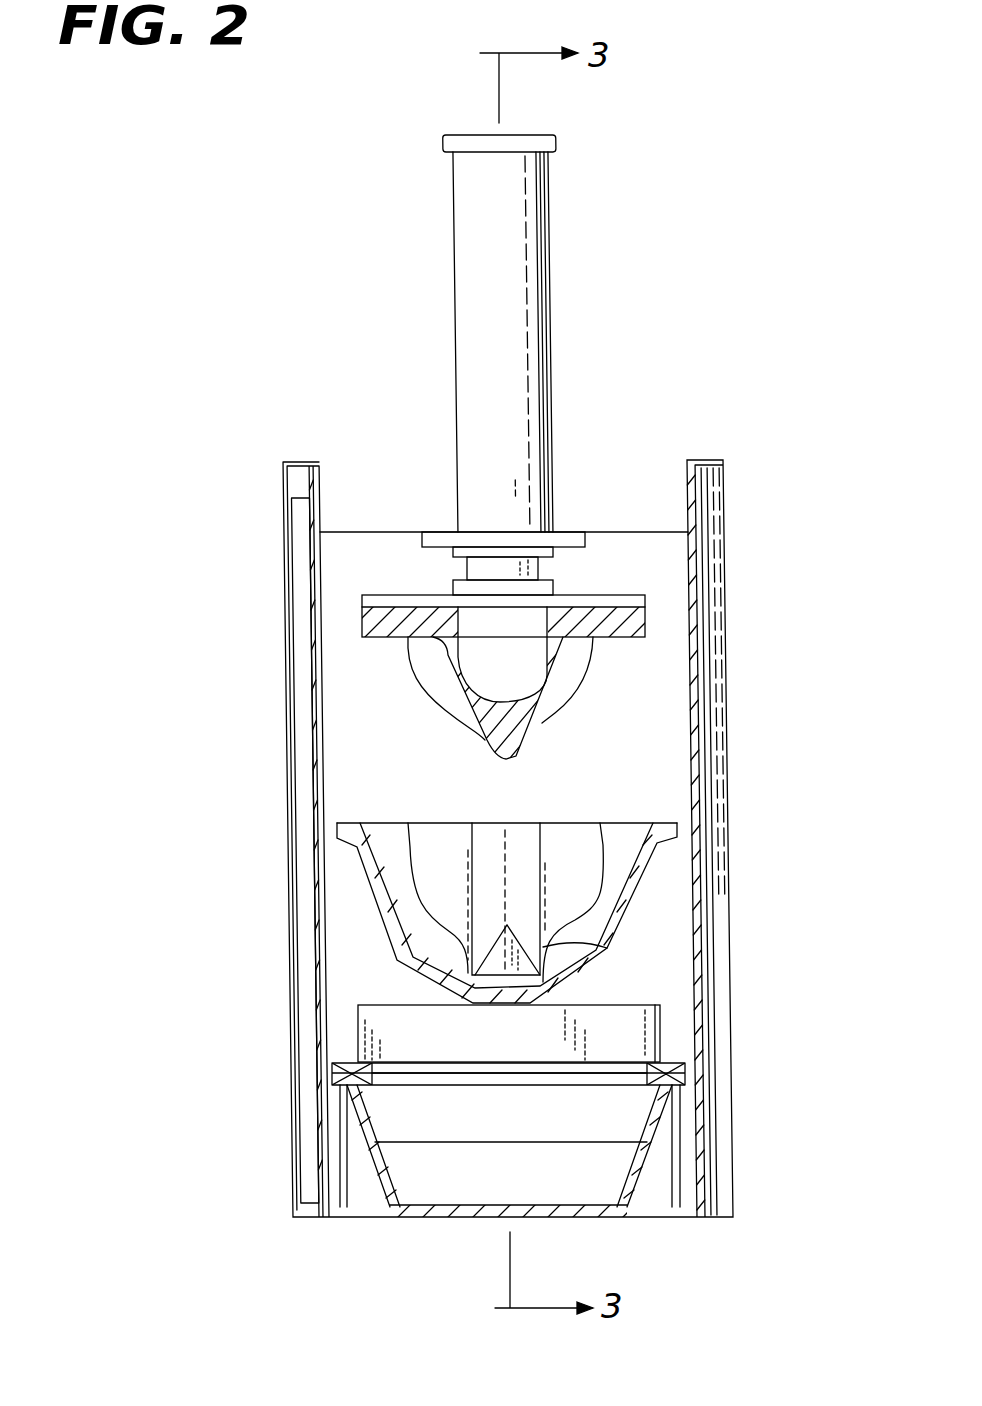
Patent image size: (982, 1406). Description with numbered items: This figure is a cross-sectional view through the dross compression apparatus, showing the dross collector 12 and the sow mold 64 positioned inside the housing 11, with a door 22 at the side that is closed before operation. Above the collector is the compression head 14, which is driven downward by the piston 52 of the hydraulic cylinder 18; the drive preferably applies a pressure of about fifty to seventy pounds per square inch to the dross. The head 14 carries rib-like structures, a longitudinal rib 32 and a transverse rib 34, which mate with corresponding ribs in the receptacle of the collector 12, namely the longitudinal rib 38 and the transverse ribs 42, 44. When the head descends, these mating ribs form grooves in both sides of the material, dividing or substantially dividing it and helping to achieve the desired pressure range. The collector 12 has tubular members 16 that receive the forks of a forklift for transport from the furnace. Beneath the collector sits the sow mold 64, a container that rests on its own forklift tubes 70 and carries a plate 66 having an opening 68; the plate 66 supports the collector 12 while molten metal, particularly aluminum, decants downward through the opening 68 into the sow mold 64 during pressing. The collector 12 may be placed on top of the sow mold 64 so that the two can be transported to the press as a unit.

The housing 11 is at (725, 525).
The dross collector 12 is at (358, 823).
The compression head 14 is at (647, 615).
The tubular members 16 is at (660, 1020).
The hydraulic cylinder 18 is at (555, 305).
The door 22 is at (290, 578).
The longitudinal rib 32 is at (520, 757).
The transverse rib 34 is at (422, 687).
The longitudinal rib 38 is at (607, 948).
The transverse rib 42 is at (598, 843).
The transverse rib 44 is at (410, 847).
The piston 52 is at (542, 573).
The sow mold 64 is at (663, 1120).
The plate 66 is at (685, 1067).
The opening 68 is at (645, 1073).
The forklift tube 70 is at (665, 1143).